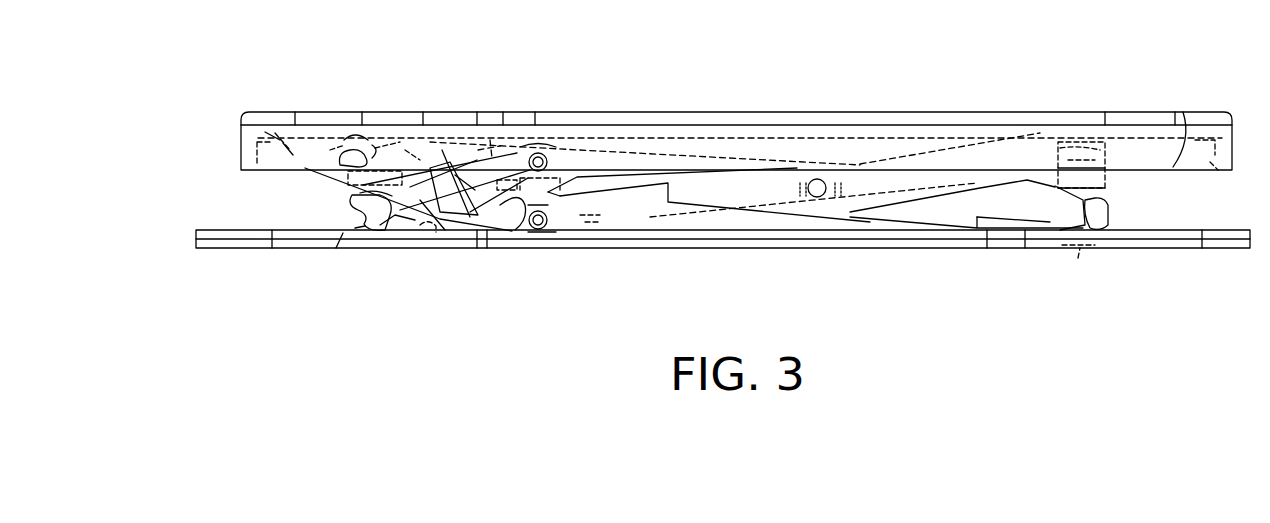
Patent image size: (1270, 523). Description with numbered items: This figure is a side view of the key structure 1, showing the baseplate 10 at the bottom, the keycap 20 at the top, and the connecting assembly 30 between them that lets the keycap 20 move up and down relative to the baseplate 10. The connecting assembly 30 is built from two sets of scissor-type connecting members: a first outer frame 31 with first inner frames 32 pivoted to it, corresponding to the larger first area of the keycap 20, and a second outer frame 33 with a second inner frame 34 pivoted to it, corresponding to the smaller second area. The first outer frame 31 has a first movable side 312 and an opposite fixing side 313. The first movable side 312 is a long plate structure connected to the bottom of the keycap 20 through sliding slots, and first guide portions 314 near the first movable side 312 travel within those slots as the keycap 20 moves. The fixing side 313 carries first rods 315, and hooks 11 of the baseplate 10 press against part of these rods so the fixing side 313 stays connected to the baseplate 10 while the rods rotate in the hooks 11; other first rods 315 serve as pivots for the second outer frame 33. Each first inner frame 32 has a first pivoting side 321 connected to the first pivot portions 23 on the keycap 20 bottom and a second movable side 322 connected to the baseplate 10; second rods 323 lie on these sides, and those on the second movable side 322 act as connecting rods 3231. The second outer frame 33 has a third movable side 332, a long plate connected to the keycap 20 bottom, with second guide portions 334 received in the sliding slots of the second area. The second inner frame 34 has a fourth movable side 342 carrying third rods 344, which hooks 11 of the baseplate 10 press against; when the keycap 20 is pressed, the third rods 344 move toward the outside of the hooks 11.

The key structure 1 is at (198, 58).
The baseplate 10 is at (197, 238).
The hooks 11 is at (1110, 192).
The keycap 20 is at (318, 128).
The first pivot portions 23 is at (497, 115).
The connecting assembly 30 is at (232, 189).
The first outer frame 31 is at (915, 220).
The first inner frames 32 is at (1005, 215).
The second outer frame 33 is at (462, 247).
The second inner frame 34 is at (384, 230).
The first movable side 312 is at (1187, 118).
The fixing side 313 is at (513, 247).
The first guide portions 314 is at (1105, 110).
The first rods 315 is at (540, 250).
The first pivoting side 321 is at (536, 118).
The second movable side 322 is at (1115, 218).
The second rods 323 is at (1080, 263).
The connecting rods 3231 is at (1078, 251).
The third movable side 332 is at (235, 127).
The second guide portions 334 is at (348, 115).
The fourth movable side 342 is at (348, 205).
The third rods 344 is at (333, 250).